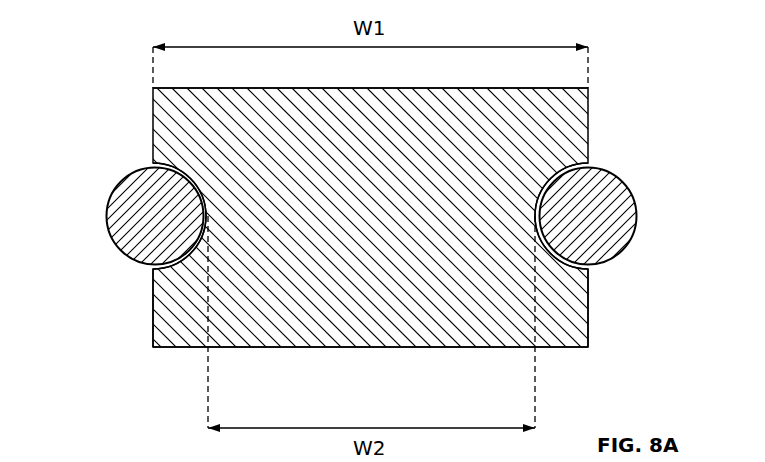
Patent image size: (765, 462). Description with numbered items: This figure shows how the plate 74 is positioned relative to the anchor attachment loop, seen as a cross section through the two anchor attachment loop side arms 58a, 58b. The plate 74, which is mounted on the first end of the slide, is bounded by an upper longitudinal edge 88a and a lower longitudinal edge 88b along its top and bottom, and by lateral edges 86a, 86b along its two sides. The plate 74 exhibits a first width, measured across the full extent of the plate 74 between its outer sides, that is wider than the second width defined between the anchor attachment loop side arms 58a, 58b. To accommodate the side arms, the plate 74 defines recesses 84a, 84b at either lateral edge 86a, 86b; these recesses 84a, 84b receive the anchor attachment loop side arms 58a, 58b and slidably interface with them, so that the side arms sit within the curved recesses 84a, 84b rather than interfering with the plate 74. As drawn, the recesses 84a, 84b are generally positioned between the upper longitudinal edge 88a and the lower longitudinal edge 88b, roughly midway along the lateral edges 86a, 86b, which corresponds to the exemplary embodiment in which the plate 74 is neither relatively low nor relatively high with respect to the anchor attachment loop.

The plate 74 is at (545, 115).
The upper longitudinal edge 88a is at (355, 87).
The lower longitudinal edge 88b is at (370, 348).
The lateral edge 86a is at (153, 308).
The lateral edge 86b is at (588, 308).
The recess 84a is at (192, 176).
The recess 84b is at (550, 172).
The anchor attachment loop side arm 58a is at (107, 219).
The anchor attachment loop side arm 58b is at (637, 219).